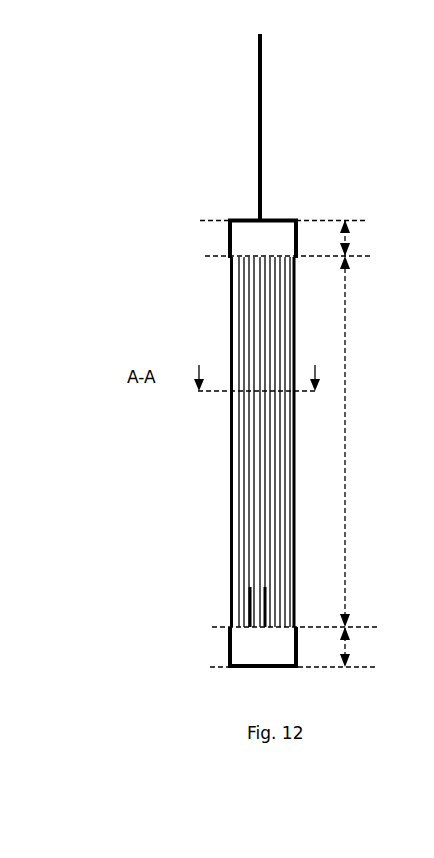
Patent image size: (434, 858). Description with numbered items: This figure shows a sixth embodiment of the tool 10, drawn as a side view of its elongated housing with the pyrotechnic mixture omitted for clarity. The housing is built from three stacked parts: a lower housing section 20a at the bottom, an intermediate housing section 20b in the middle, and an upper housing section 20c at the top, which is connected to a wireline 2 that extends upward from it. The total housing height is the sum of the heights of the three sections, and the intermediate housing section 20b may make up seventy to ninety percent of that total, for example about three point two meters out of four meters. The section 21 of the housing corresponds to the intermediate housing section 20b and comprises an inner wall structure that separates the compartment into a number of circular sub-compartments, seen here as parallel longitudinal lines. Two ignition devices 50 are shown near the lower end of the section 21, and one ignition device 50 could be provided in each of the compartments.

The wireline 2 is at (261, 99).
The heat exchanger assembly 10 is at (156, 183).
The lower housing section 20a is at (228, 648).
The intermediate housing section 20b is at (230, 487).
The upper housing section 20c is at (228, 240).
The section of the housing 21 is at (214, 427).
The ignition device 50 is at (265, 603).